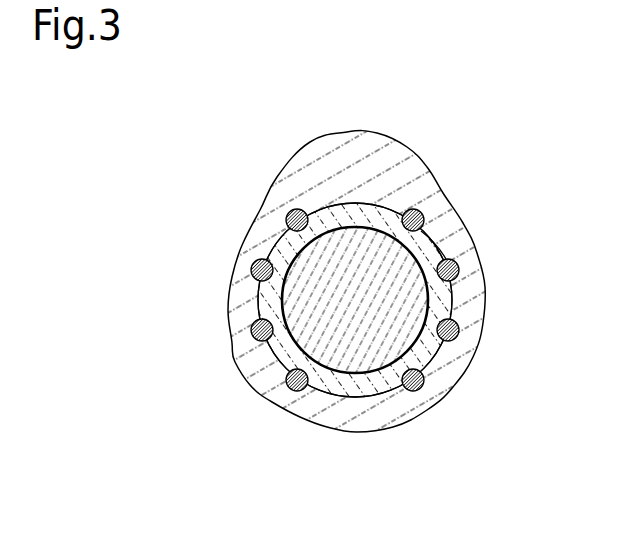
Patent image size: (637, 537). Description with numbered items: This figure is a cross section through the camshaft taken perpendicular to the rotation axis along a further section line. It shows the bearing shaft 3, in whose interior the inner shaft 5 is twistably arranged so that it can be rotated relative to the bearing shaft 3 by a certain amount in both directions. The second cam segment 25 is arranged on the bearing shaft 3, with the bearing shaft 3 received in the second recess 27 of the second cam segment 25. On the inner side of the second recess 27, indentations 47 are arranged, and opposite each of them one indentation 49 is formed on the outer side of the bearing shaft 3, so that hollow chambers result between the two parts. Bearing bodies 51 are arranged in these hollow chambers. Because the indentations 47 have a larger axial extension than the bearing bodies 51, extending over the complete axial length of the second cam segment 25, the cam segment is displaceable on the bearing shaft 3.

The bearing shaft 3 is at (369, 270).
The inner shaft 5 is at (302, 332).
The second cam segment 25 is at (402, 163).
The second recess 27 is at (393, 207).
The indentations 47 is at (460, 277).
The indentation 49 is at (448, 290).
The bearing bodies 51 is at (452, 253).